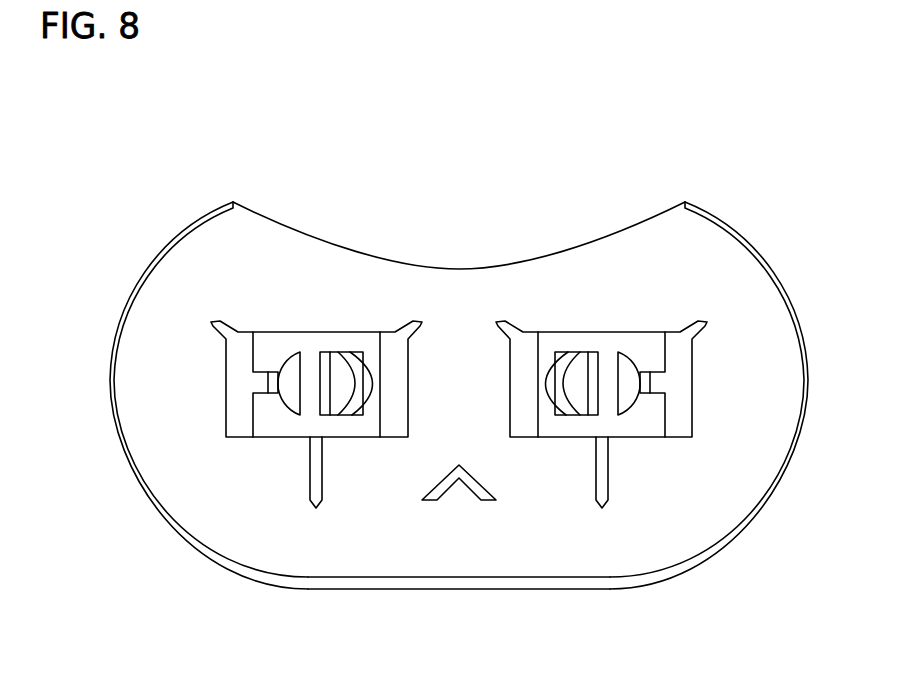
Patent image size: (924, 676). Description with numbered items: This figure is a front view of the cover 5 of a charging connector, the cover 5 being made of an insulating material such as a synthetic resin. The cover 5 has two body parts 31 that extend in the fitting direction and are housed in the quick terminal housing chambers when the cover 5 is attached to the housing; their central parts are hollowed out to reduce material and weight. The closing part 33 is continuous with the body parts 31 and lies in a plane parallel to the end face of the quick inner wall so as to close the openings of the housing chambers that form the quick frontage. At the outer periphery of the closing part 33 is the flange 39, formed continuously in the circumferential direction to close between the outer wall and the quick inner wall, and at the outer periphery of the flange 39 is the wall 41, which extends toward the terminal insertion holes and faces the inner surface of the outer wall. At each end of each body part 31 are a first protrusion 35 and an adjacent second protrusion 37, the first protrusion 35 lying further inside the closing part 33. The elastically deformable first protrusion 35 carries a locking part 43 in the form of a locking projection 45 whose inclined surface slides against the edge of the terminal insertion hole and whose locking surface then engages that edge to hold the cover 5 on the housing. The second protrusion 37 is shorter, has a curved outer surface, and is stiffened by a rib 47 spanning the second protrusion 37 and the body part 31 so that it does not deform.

The cover 5 is at (470, 188).
The body parts 31 is at (315, 343).
The closing part 33 is at (457, 520).
The first protrusion 35 is at (338, 372).
The second protrusion 37 is at (288, 395).
The flange 39 is at (758, 428).
The wall 41 is at (130, 297).
The locking part 43 is at (377, 396).
The locking projection 45 is at (355, 405).
The rib 47 is at (272, 376).